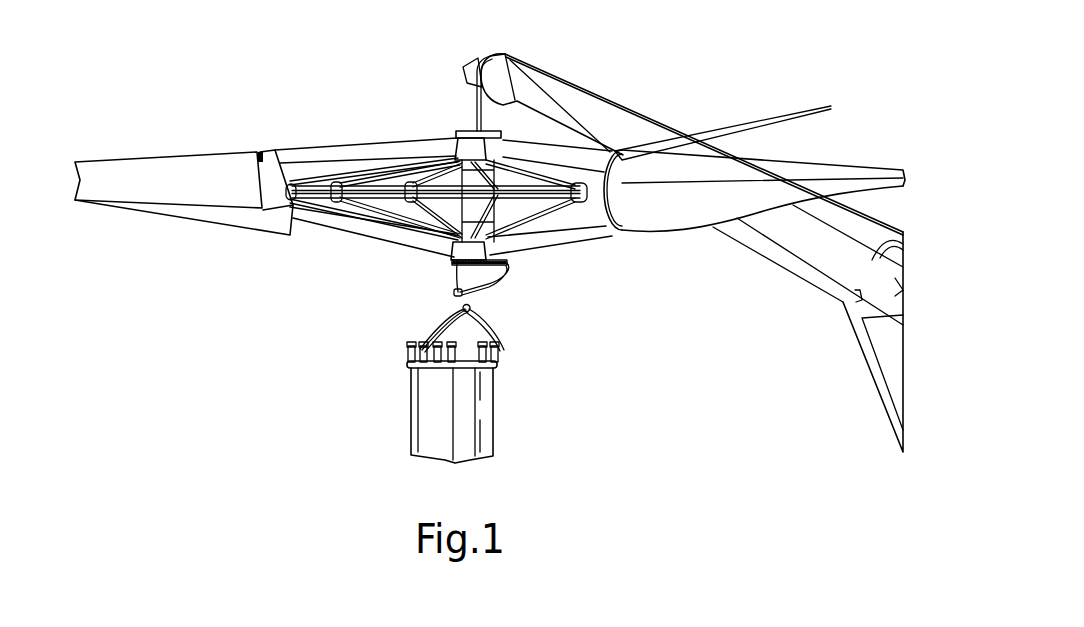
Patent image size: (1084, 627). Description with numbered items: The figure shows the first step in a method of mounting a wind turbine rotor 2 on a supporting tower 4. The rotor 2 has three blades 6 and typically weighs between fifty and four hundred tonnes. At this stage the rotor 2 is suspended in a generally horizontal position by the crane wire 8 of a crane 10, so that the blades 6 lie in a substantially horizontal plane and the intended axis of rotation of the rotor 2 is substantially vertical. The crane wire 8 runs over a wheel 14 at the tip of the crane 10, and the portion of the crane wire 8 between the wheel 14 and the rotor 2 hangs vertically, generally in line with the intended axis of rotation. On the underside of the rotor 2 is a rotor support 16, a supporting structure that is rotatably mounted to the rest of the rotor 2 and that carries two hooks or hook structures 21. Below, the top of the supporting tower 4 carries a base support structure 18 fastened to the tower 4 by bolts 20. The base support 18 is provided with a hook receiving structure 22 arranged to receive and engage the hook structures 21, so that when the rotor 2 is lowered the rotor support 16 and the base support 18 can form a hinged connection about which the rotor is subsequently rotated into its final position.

The rotor 2 is at (372, 142).
The supporting tower 4 is at (483, 415).
The blades 6 is at (167, 165).
The crane wire 8 is at (475, 103).
The crane 10 is at (577, 105).
The wheel 14 is at (503, 53).
The rotor support 16 is at (513, 275).
The base support structure 18 is at (497, 330).
The bolts 20 is at (407, 357).
The hook structures 21 is at (453, 292).
The hook receiving structure 22 is at (463, 307).